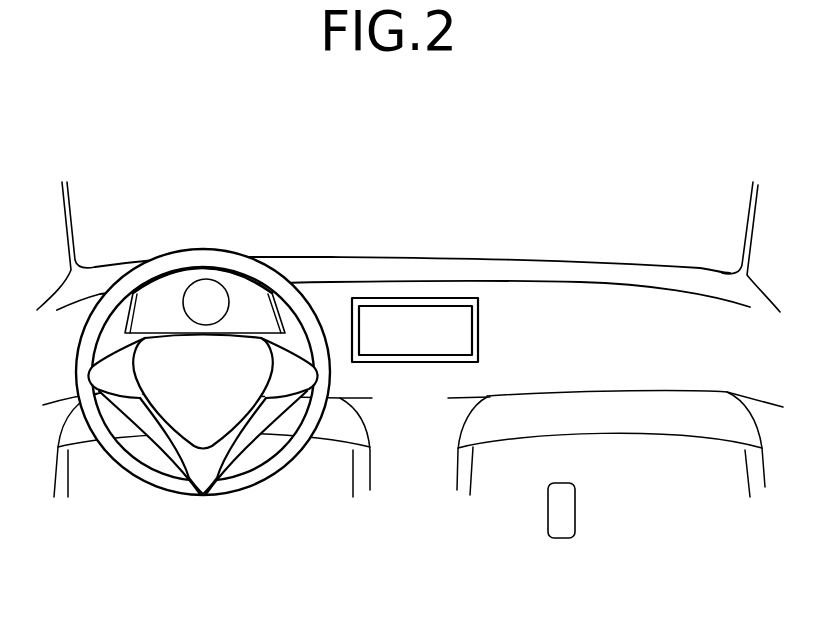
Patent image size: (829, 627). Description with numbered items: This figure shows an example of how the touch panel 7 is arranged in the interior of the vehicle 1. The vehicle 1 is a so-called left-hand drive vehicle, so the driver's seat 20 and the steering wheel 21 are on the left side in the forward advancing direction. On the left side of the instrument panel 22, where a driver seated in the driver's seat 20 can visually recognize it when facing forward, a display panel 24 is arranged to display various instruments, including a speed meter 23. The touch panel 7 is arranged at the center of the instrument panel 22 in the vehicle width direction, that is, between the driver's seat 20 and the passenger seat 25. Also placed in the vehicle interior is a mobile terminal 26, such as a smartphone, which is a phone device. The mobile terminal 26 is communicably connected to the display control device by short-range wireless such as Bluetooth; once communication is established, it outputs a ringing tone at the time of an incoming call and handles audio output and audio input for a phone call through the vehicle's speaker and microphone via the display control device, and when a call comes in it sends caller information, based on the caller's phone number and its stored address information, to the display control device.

The vehicle 1 is at (408, 216).
The touch panel 7 is at (463, 323).
The driver's seat 20 is at (98, 492).
The steering wheel 21 is at (238, 266).
The instrument panel 22 is at (580, 307).
The speed meter 23 is at (207, 293).
The display panel 24 is at (165, 286).
The passenger seat 25 is at (712, 487).
The mobile terminal 26 is at (570, 505).